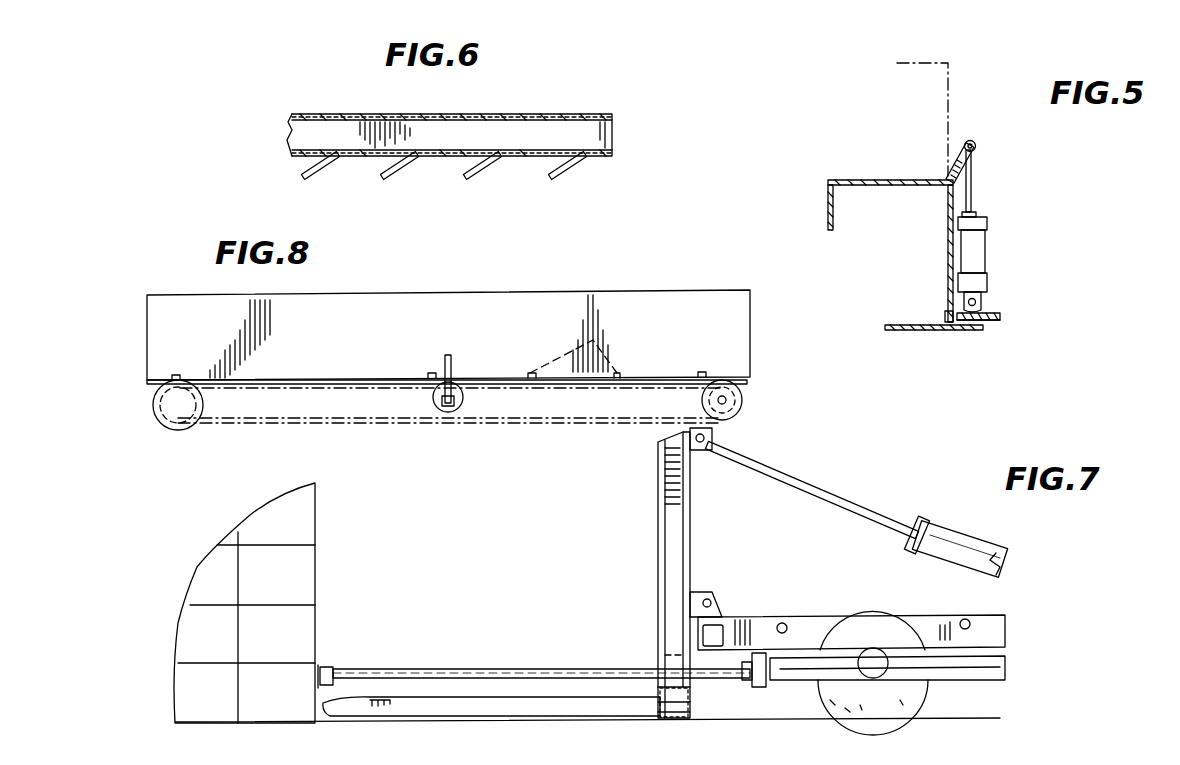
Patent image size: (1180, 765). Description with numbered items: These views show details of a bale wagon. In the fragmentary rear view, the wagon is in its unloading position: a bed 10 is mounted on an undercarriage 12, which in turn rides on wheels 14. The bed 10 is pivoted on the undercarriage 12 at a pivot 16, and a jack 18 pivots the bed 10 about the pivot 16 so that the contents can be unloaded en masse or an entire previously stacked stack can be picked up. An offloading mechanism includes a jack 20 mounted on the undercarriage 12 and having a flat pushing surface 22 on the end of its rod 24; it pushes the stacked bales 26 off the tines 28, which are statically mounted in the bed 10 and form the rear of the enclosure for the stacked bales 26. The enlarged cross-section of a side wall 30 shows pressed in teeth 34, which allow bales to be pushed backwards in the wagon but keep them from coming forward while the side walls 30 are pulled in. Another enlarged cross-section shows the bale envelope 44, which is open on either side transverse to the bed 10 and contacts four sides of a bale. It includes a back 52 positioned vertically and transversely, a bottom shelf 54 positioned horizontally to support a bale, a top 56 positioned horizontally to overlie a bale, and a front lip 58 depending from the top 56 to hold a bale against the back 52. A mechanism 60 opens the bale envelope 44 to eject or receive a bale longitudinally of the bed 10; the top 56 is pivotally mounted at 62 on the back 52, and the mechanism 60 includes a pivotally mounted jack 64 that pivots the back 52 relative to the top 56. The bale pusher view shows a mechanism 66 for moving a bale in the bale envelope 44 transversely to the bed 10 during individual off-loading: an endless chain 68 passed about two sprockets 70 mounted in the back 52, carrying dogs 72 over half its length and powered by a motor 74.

In FIG. 7, the bed 10 is at (690, 518).
In FIG. 7, the undercarriage 12 is at (805, 617).
In FIG. 7, the wheels 14 is at (893, 715).
In FIG. 7, the pivot 16 is at (712, 592).
In FIG. 7, the jack 18 is at (975, 538).
In FIG. 7, the jack 20 is at (996, 681).
In FIG. 7, the flat pushing surface 22 is at (318, 666).
In FIG. 7, the rod 24 is at (465, 668).
In FIG. 7, the stacked bales 26 is at (316, 530).
In FIG. 7, the tines 28 is at (462, 712).
In FIG. 6, the side walls 30 is at (520, 114).
In FIG. 6, the pressed in teeth 34 is at (566, 170).
In FIG. 5, the bale envelope 44 is at (851, 176).
In FIG. 8, the bale envelope 44 is at (571, 288).
In FIG. 5, the back 52 is at (948, 236).
In FIG. 5, the bottom shelf 54 is at (928, 331).
In FIG. 5, the top 56 is at (893, 180).
In FIG. 8, the top 56 is at (670, 327).
In FIG. 5, the front lip 58 is at (828, 212).
In FIG. 5, the mechanism for opening the bale envelope 60 is at (998, 240).
In FIG. 5, the pivotal mounting 62 is at (947, 184).
In FIG. 5, the pivotally mounted jack 64 is at (988, 282).
In FIG. 5, the mechanism for moving a bale transversely 66 is at (946, 300).
In FIG. 8, the mechanism for moving a bale transversely 66 is at (333, 430).
In FIG. 5, the endless chain 68 is at (998, 321).
In FIG. 8, the endless chain 68 is at (383, 420).
In FIG. 5, the sprockets 70 is at (990, 312).
In FIG. 8, the sprockets 70 is at (190, 428).
In FIG. 5, the dogs 72 is at (944, 316).
In FIG. 8, the dogs 72 is at (527, 369).
In FIG. 8, the motor 74 is at (163, 428).